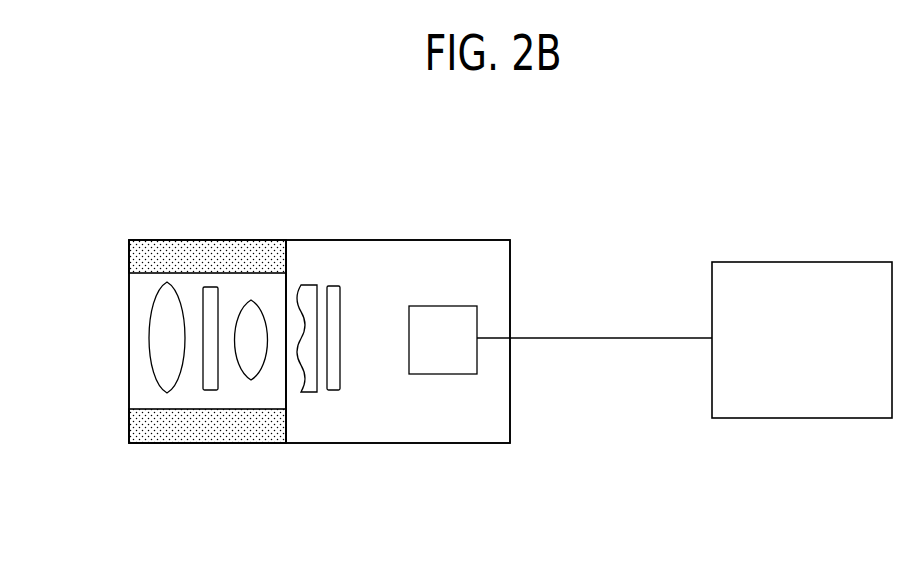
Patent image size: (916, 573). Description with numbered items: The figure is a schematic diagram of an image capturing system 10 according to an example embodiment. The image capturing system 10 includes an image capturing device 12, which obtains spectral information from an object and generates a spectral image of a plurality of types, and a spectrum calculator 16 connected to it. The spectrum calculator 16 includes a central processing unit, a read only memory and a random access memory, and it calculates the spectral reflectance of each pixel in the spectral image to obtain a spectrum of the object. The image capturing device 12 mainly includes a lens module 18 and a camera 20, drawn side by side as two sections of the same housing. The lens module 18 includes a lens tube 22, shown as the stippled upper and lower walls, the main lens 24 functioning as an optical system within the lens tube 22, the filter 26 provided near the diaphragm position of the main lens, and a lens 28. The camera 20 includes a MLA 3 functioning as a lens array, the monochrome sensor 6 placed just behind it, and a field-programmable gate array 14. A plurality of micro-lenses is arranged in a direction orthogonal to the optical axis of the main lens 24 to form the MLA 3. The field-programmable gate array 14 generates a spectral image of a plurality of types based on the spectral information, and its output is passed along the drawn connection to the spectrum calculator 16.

The image capturing system 10 is at (485, 156).
The image capturing device 12 is at (303, 219).
The field-programmable gate array 14 is at (450, 306).
The spectrum calculator 16 is at (838, 262).
The lens module 18 is at (130, 452).
The camera 20 is at (510, 452).
The lens tube 22 is at (168, 256).
The main lens 24 is at (152, 304).
The filter 26 is at (210, 287).
The lens 28 is at (251, 300).
The MLA 3 is at (305, 283).
The monochrome sensor 6 is at (332, 285).